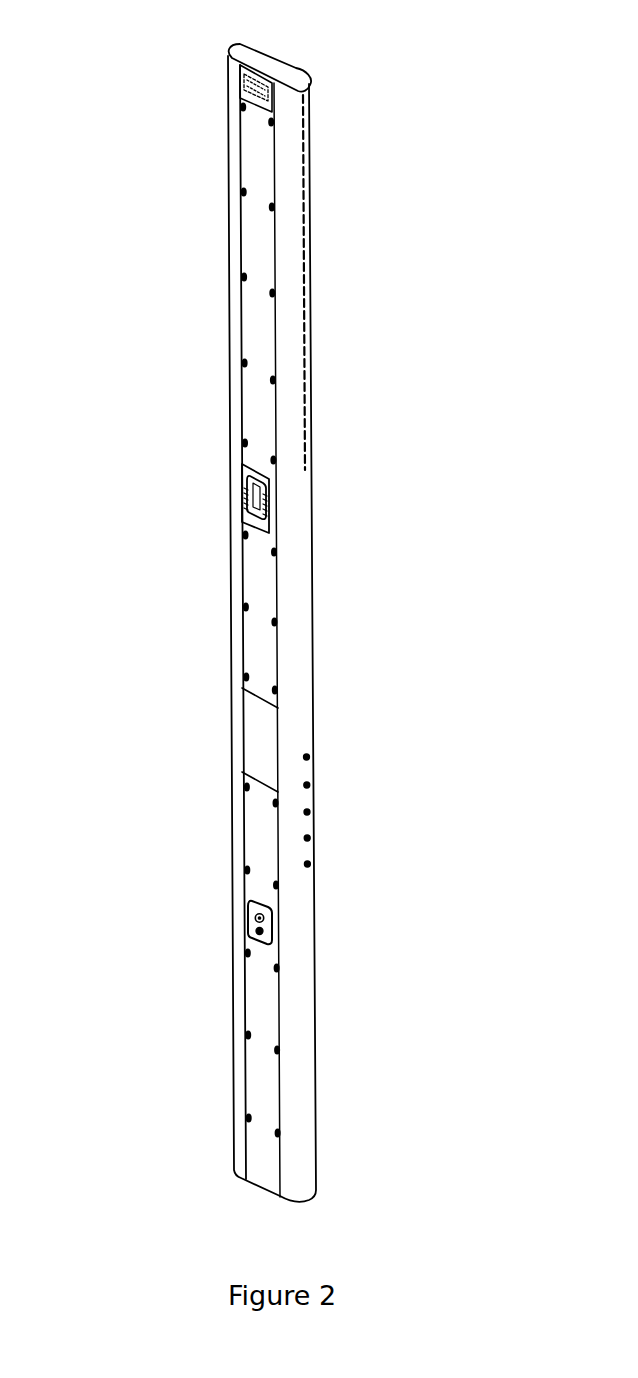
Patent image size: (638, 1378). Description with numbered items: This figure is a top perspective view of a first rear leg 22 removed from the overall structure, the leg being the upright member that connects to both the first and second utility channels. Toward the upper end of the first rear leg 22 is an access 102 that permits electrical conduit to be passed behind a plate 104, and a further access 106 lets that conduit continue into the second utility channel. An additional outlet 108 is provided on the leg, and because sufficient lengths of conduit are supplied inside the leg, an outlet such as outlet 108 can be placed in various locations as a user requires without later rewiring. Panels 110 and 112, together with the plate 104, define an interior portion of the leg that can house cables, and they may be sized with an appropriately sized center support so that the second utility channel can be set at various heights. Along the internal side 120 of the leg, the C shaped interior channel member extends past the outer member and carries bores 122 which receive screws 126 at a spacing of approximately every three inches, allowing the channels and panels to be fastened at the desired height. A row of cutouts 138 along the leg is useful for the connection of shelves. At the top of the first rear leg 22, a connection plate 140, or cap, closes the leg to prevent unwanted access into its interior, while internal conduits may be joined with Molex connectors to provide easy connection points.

The first rear leg 22 is at (363, 358).
The connection plate 140 is at (264, 60).
The access 102 is at (269, 118).
The plate 104 is at (260, 258).
The access 106 is at (260, 507).
The outlet 108 is at (272, 917).
The panel 110 is at (263, 662).
The panel 112 is at (268, 1026).
The internal side 120 is at (262, 1083).
The bore 122 is at (246, 471).
The screw 126 is at (246, 364).
The cutout 138 is at (305, 427).